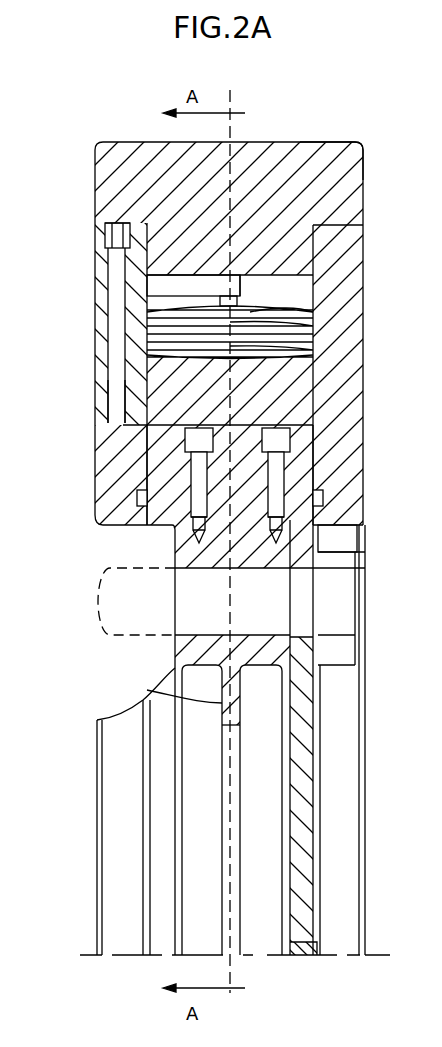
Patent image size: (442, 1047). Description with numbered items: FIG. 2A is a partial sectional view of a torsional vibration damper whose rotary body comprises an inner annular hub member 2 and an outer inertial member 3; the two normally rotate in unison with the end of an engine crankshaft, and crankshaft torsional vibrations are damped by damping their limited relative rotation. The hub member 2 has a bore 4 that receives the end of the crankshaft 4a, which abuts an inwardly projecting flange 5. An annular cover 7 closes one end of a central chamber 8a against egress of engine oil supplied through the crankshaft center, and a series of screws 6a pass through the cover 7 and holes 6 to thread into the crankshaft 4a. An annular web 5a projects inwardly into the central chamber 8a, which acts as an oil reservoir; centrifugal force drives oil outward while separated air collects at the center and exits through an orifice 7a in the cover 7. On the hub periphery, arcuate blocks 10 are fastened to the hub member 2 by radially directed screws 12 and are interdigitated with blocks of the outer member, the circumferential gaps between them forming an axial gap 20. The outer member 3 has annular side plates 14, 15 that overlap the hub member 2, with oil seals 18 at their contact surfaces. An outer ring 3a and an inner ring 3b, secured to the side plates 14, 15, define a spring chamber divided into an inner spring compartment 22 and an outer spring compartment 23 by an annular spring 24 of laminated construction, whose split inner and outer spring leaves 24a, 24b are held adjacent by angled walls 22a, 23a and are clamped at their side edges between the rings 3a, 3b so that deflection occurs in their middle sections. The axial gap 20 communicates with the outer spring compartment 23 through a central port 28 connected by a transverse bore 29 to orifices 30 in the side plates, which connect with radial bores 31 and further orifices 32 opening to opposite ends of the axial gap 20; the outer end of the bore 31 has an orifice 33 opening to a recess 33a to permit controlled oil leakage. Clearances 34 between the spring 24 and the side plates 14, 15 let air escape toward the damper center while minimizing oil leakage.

The hub member 2 is at (253, 552).
The outer inertial member 3 is at (273, 138).
The outer ring 3a is at (332, 158).
The inner ring 3b is at (300, 393).
The bore 4 is at (117, 780).
The crankshaft 4a is at (97, 720).
The flange 5 is at (190, 648).
The annular web 5a is at (147, 690).
The holes 6 is at (115, 577).
The screws 6a is at (337, 648).
The annular cover 7 is at (300, 735).
The orifice 7a is at (313, 947).
The central chamber 8a is at (277, 799).
The arcuate blocks 10 is at (160, 465).
The screws 12 is at (300, 455).
The side plate 14 is at (365, 398).
The side plate 15 is at (100, 374).
The oil seals 18 is at (133, 495).
The axial gap 20 is at (325, 490).
The inner spring compartment 22 is at (147, 405).
The angled walls 22a is at (330, 363).
The outer spring compartment 23 is at (147, 313).
The angled walls 23a is at (320, 300).
The annular spring 24 is at (147, 333).
The inner spring leaves 24a is at (313, 352).
The outer spring leaves 24b is at (305, 325).
The central port 28 is at (240, 305).
The transverse bore 29 is at (207, 273).
The orifices 30 is at (147, 283).
The radial bores 31 is at (113, 398).
The orifices 32 is at (165, 437).
The orifice 33 is at (107, 238).
The recess 33a is at (105, 222).
The clearances 34 is at (147, 342).